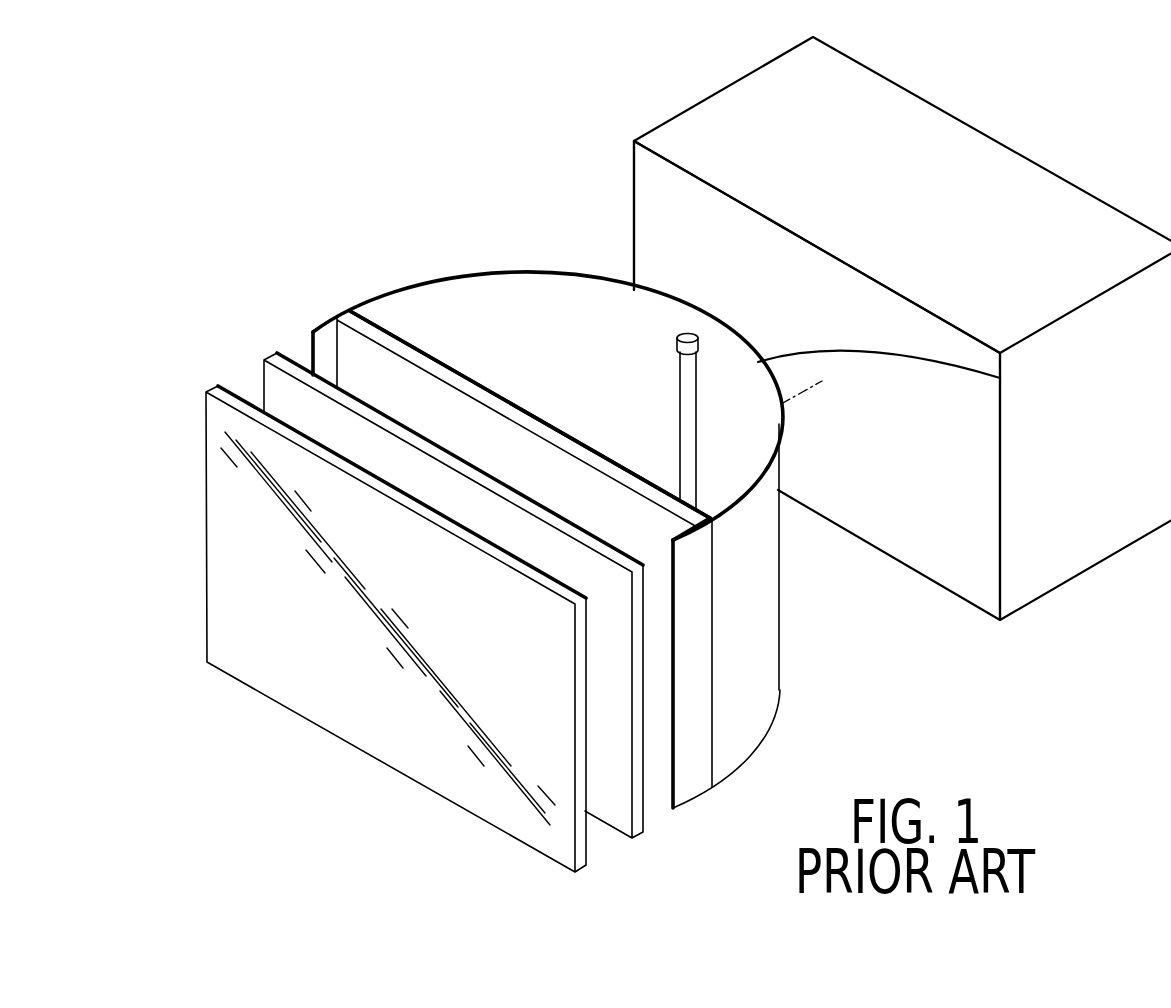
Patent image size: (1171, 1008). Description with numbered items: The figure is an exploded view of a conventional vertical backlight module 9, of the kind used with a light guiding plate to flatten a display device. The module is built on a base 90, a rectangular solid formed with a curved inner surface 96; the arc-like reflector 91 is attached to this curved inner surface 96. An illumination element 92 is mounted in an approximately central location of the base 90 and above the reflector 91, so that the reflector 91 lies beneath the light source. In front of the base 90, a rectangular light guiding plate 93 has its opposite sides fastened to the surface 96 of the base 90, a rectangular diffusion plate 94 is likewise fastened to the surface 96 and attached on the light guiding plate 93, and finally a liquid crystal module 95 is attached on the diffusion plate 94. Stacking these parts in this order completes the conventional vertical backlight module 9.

The vertical backlight module 9 is at (343, 176).
The base 90 is at (977, 143).
The reflector 91 is at (553, 307).
The illumination element 92 is at (687, 412).
The light guiding plate 93 is at (355, 343).
The diffusion plate 94 is at (282, 382).
The liquid crystal module 95 is at (223, 417).
The curved inner surface 96 is at (690, 217).